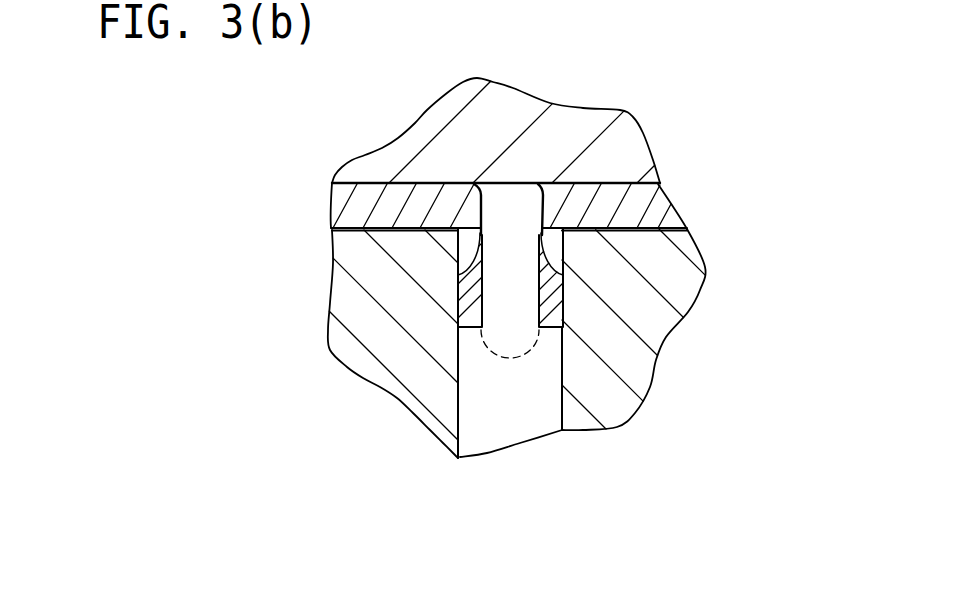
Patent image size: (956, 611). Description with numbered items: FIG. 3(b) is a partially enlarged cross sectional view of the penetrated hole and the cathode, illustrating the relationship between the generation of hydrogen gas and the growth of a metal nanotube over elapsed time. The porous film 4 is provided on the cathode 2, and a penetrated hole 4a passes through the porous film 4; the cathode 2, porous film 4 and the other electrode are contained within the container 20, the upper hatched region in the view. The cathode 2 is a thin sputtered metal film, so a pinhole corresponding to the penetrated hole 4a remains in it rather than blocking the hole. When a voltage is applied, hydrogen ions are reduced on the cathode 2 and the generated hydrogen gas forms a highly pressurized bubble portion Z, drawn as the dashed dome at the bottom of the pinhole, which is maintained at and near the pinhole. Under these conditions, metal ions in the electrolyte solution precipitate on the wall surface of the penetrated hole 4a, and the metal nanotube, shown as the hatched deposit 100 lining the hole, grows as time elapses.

The container 20 is at (558, 133).
The cathode 2 is at (650, 210).
The porous film 4 is at (373, 330).
The wedge insert 100 is at (467, 282).
The penetrated hole 4a is at (490, 417).
The bubble portion Z is at (517, 331).